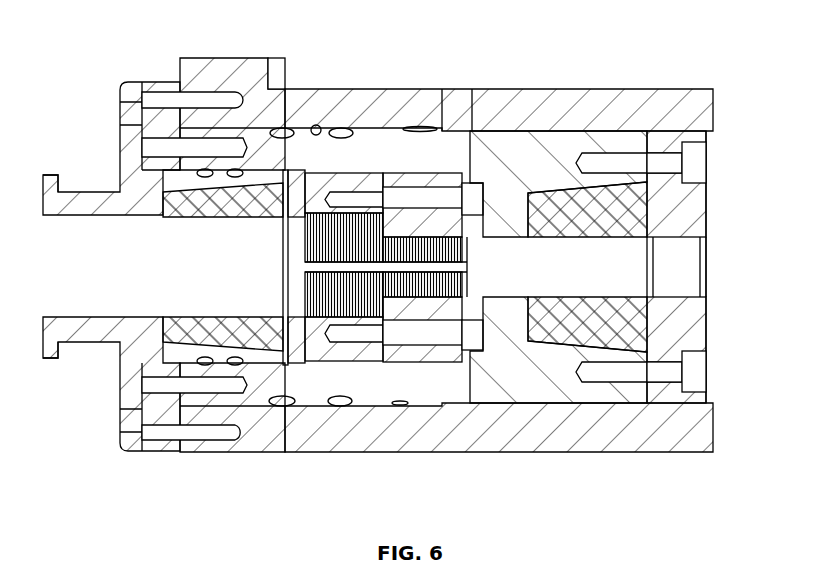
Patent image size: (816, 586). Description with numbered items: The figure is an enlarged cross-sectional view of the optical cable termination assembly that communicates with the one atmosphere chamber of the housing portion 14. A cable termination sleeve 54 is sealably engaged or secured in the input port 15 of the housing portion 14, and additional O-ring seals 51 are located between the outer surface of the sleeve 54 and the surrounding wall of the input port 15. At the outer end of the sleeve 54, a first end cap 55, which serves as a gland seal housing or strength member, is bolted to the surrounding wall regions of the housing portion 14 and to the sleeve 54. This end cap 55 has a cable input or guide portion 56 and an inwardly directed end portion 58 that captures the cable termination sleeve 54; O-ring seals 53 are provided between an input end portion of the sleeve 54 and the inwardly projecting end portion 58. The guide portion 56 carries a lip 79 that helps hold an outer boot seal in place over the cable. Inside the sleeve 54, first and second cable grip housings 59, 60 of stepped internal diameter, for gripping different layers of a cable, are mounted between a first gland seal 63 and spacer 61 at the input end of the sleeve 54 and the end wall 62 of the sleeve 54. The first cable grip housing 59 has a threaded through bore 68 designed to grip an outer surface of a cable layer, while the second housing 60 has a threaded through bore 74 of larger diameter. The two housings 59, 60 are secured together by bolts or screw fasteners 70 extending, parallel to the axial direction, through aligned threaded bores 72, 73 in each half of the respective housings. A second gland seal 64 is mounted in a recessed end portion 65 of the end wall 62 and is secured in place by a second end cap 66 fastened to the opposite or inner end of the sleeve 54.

The housing portion 14 is at (640, 442).
The input port 15 is at (345, 127).
The O-ring seals 51 is at (353, 200).
The O-ring seals 53 is at (237, 363).
The cable termination sleeve 54 is at (537, 382).
The first end cap 55 is at (130, 180).
The cable input portion 56 is at (90, 335).
The inwardly directed end portion 58 is at (284, 366).
The first cable grip housing 59 is at (430, 353).
The second cable grip housing 60 is at (360, 353).
The spacer 61 is at (272, 130).
The end wall 62 is at (503, 202).
The first gland seal 63 is at (223, 210).
The second gland seal 64 is at (565, 193).
The recessed end portion 65 is at (620, 344).
The second end cap 66 is at (697, 203).
The threaded through bore 68 is at (450, 292).
The screw fasteners 70 is at (478, 185).
The threaded bore 72 is at (471, 200).
The threaded bore 73 is at (397, 200).
The threaded through bore 74 is at (347, 217).
The lip 79 is at (53, 355).